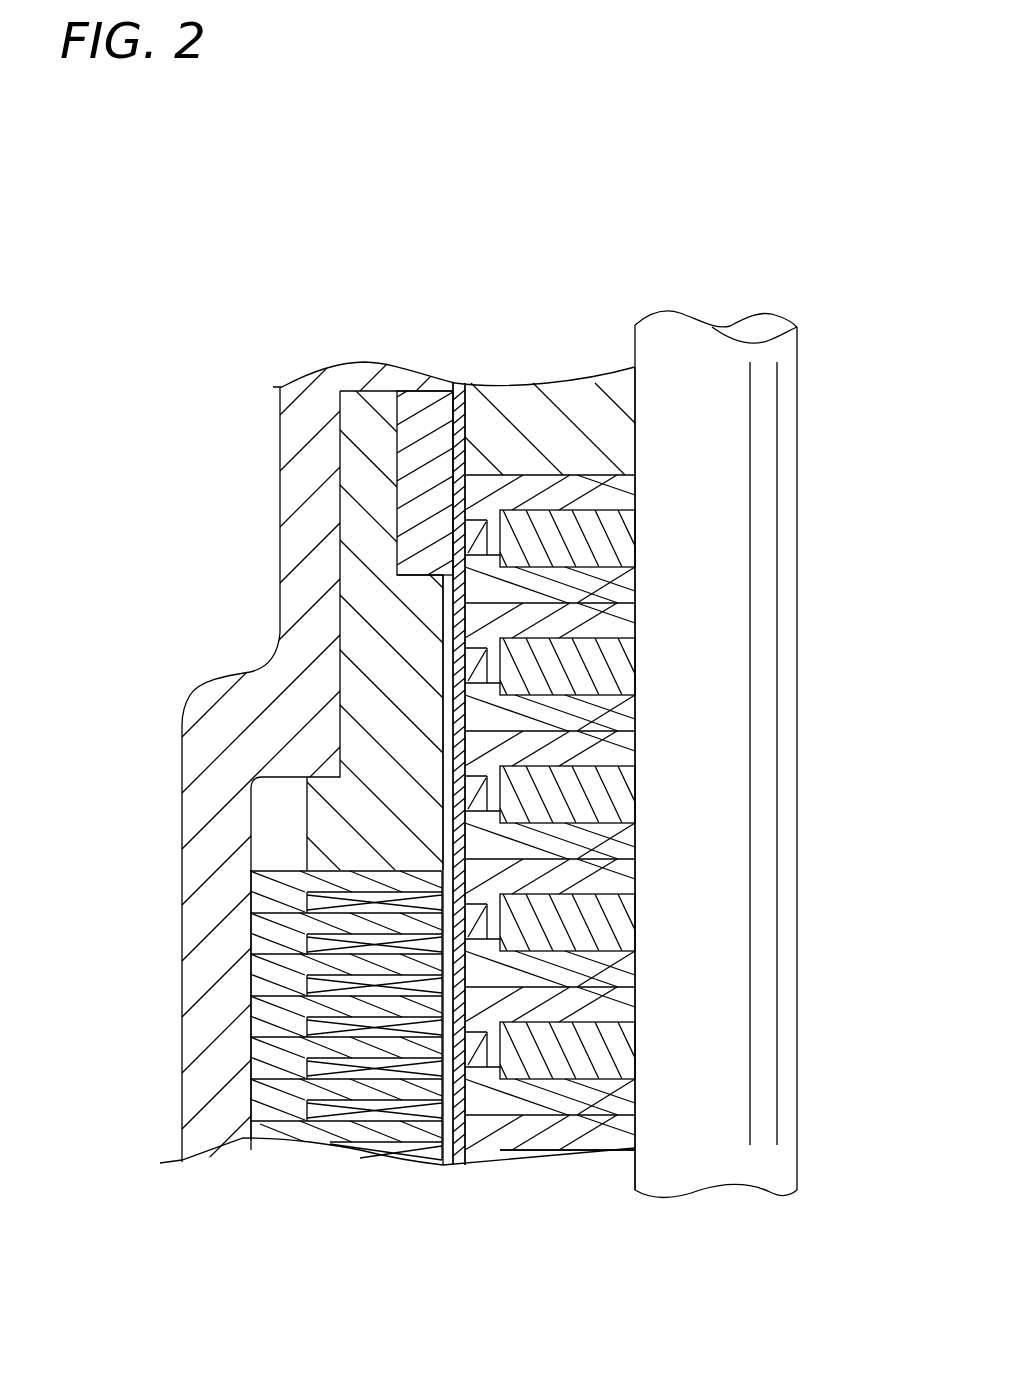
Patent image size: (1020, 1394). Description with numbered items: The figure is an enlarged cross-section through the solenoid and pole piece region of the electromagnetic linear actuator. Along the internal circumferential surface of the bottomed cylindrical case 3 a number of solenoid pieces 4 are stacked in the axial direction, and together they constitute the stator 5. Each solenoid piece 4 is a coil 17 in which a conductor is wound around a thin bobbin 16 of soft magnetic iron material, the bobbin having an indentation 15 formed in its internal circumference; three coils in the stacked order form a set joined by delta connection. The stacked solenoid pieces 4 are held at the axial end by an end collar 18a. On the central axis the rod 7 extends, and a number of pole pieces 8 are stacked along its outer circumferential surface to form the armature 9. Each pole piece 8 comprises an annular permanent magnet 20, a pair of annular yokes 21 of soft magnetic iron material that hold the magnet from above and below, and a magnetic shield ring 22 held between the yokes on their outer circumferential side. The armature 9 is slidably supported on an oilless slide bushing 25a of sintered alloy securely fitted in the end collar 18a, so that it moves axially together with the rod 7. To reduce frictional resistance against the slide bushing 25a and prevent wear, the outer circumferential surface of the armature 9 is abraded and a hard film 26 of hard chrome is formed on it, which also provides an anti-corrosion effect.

The bottomed cylindrical case 3 is at (192, 868).
The solenoid piece 4 is at (321, 1096).
The stator 5 is at (243, 1066).
The rod 7 is at (790, 520).
The pole piece 8 is at (549, 686).
The armature 9 is at (583, 1154).
The indentation 15 is at (347, 1107).
The bobbin 16 is at (273, 1118).
The coil 17 is at (374, 1071).
The end collar 18a is at (352, 533).
The annular permanent magnet 20 is at (583, 505).
The annular yoke 21 is at (562, 490).
The magnetic shield ring 22 is at (490, 490).
The oilless slide bushing 25a is at (410, 372).
The hard film 26 is at (460, 1167).